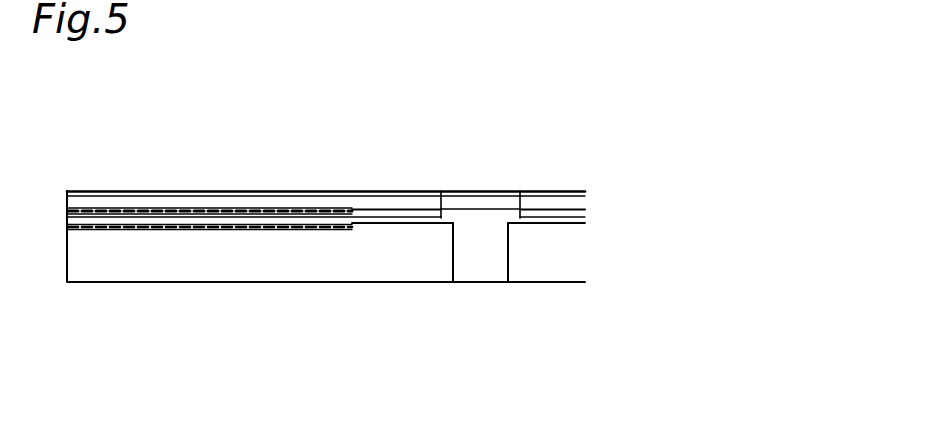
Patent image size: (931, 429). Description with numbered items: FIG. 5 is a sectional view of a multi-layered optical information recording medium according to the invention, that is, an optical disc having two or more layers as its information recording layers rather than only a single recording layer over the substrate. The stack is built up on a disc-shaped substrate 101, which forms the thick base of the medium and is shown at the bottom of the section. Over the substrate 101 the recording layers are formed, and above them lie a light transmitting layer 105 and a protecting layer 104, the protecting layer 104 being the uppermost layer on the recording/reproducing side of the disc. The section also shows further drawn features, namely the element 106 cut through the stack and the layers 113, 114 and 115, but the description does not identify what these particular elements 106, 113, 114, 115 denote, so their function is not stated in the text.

The substrate 101 is at (163, 247).
The protecting layer 104 is at (403, 204).
The light transmitting layer 105 is at (367, 215).
The through hole 106 is at (483, 270).
The lower wiring layer 113 is at (140, 230).
The upper wiring layer 114 is at (173, 211).
The cover layer 115 is at (391, 213).